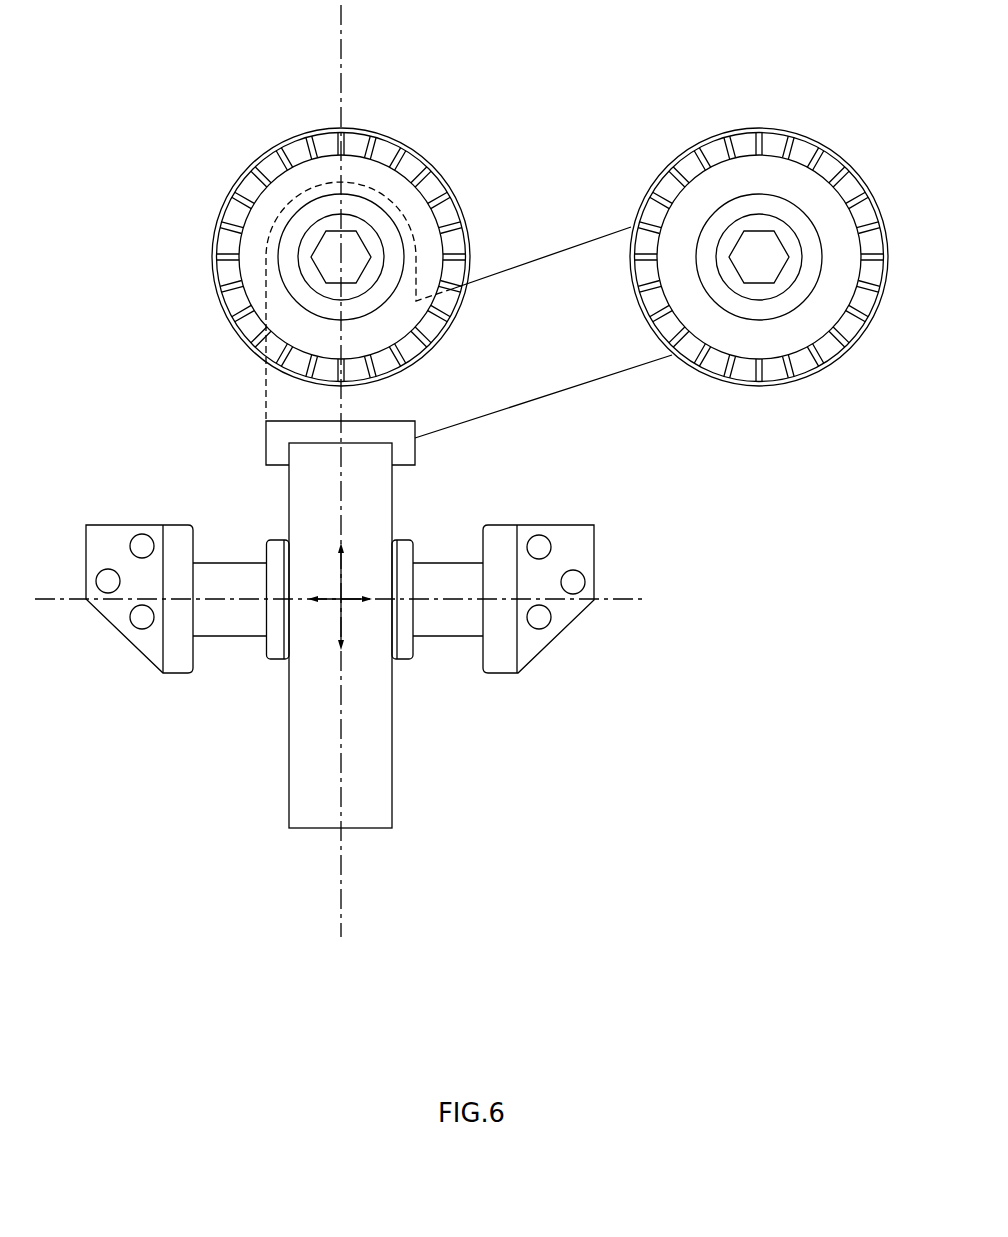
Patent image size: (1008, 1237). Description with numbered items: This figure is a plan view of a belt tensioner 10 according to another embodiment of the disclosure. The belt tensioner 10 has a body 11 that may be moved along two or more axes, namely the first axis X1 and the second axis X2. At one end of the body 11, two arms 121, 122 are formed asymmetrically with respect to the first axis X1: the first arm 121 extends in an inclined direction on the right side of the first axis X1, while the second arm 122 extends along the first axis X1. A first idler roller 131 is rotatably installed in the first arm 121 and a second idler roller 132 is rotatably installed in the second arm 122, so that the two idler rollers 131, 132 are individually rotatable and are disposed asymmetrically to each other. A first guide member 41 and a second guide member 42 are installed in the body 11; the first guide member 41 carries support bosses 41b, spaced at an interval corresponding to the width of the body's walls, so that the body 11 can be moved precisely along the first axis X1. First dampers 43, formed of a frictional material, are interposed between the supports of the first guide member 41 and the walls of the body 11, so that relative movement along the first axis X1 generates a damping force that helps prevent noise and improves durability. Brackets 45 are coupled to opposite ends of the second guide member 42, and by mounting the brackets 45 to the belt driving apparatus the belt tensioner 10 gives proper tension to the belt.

The belt tensioner 10 is at (176, 31).
The body 11 is at (278, 807).
The first guide member 41 is at (338, 616).
The support bosses 41b is at (280, 545).
The second guide member 42 is at (229, 625).
The first dampers 43 is at (402, 545).
The brackets 45 is at (135, 635).
The first arm 121 is at (557, 277).
The second arm 122 is at (238, 333).
The first idler roller 131 is at (757, 128).
The second idler roller 132 is at (396, 141).
The first axis X1 is at (342, 890).
The second axis X2 is at (628, 600).